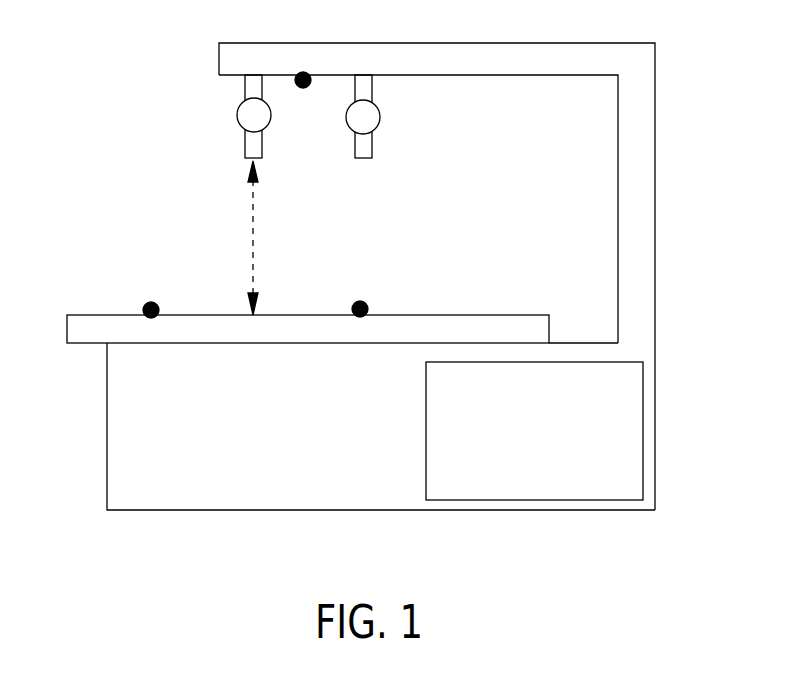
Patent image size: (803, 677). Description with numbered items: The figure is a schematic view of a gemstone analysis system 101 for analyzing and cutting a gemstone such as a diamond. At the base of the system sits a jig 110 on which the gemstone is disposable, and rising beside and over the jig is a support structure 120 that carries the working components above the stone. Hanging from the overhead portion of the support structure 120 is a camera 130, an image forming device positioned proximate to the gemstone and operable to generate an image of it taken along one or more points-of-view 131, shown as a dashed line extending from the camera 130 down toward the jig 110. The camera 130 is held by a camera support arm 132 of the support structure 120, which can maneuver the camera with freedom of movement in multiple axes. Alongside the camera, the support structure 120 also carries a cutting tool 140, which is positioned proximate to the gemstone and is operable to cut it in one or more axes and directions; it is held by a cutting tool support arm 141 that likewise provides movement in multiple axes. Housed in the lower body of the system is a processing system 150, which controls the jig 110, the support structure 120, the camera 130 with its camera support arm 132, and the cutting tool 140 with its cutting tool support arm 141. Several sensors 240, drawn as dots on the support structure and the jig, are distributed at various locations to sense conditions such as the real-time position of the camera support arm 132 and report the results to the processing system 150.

The gemstone analysis system 101 is at (105, 512).
The jig 110 is at (75, 321).
The support structure 120 is at (642, 260).
The camera 130 is at (248, 150).
The point-of-view 131 is at (243, 226).
The camera support arm 132 is at (243, 111).
The cutting tool 140 is at (364, 152).
The cutting tool support arm 141 is at (372, 119).
The processing system 150 is at (645, 438).
The sensors 240 is at (304, 89).